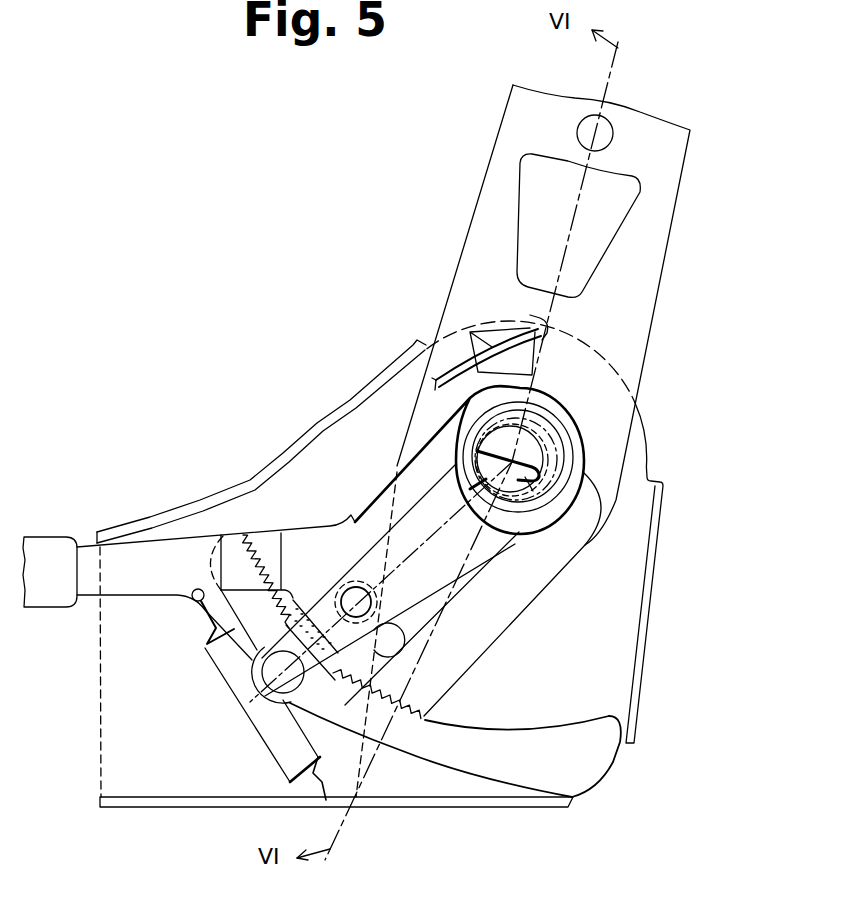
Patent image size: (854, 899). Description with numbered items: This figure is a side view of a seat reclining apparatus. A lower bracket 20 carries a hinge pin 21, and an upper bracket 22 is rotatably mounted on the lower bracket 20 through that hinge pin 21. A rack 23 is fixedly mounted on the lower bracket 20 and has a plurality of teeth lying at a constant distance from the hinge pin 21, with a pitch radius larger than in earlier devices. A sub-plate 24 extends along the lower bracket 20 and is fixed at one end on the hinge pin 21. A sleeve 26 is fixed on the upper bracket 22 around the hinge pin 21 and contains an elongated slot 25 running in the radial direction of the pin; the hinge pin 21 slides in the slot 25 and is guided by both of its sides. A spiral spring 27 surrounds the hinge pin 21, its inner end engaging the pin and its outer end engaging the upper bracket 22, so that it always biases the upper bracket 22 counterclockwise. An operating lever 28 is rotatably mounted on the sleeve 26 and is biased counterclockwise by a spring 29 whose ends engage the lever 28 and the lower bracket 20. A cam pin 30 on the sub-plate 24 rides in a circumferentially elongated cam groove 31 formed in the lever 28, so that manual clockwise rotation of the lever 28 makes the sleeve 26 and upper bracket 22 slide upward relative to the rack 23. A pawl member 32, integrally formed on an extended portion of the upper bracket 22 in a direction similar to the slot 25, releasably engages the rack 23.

The lower bracket 20 is at (484, 809).
The hinge pin 21 is at (529, 486).
The upper bracket 22 is at (654, 323).
The rack 23 is at (587, 757).
The sub-plate 24 is at (262, 693).
The elongated slot 25 is at (540, 432).
The sleeve 26 is at (500, 514).
The spiral spring 27 is at (487, 343).
The operating lever 28 is at (52, 593).
The spring 29 is at (207, 646).
The cam pin 30 is at (352, 588).
The cam groove 31 is at (392, 641).
The pawl member 32 is at (440, 697).